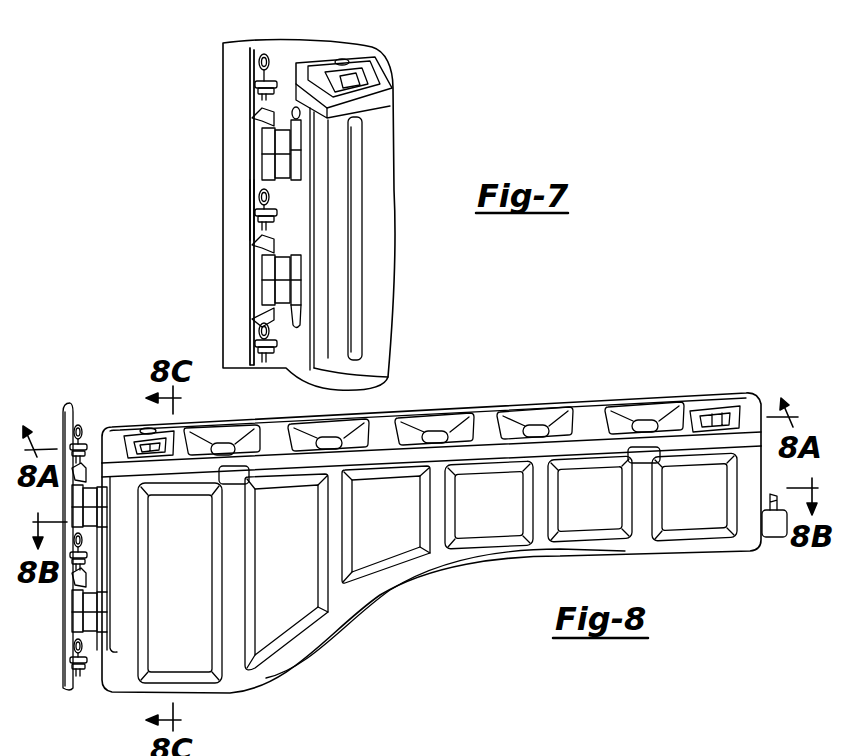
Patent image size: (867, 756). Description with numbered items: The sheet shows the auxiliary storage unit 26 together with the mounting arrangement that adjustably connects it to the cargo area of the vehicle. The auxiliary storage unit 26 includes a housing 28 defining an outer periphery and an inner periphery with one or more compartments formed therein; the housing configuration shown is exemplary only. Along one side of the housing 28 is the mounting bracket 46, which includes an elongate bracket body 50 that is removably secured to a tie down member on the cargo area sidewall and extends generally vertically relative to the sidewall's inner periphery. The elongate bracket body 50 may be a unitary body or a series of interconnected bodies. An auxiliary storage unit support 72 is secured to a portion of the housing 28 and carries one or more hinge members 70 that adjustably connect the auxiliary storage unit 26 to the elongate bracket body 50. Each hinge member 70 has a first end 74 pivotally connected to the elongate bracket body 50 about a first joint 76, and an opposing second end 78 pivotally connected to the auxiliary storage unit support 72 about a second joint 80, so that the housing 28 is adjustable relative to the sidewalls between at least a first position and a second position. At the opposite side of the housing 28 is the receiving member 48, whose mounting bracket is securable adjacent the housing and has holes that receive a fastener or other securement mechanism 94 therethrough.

In FIG. 7, the auxiliary storage unit 26 is at (391, 85).
In FIG. 8, the auxiliary storage unit 26 is at (594, 388).
In FIG. 8, the housing 28 is at (433, 428).
In FIG. 7, the mounting bracket 46 is at (298, 363).
In FIG. 8, the mounting bracket 46 is at (70, 408).
In FIG. 8, the receiving member 48 is at (771, 543).
In FIG. 7, the elongate bracket body 50 is at (262, 52).
In FIG. 7, the hinge member 70 is at (282, 265).
In FIG. 7, the auxiliary storage unit support 72 is at (306, 208).
In FIG. 7, the first end 74 is at (262, 285).
In FIG. 7, the first joint 76 is at (262, 157).
In FIG. 7, the second end 78 is at (296, 262).
In FIG. 7, the second joint 80 is at (272, 128).
In FIG. 7, the fastener 94 is at (255, 90).